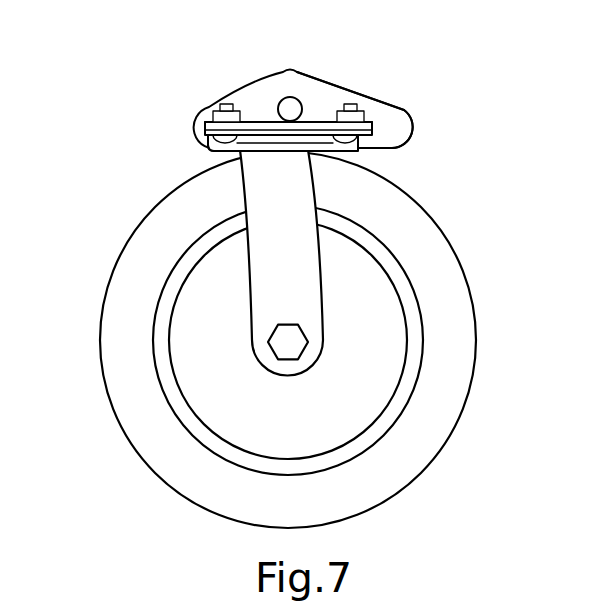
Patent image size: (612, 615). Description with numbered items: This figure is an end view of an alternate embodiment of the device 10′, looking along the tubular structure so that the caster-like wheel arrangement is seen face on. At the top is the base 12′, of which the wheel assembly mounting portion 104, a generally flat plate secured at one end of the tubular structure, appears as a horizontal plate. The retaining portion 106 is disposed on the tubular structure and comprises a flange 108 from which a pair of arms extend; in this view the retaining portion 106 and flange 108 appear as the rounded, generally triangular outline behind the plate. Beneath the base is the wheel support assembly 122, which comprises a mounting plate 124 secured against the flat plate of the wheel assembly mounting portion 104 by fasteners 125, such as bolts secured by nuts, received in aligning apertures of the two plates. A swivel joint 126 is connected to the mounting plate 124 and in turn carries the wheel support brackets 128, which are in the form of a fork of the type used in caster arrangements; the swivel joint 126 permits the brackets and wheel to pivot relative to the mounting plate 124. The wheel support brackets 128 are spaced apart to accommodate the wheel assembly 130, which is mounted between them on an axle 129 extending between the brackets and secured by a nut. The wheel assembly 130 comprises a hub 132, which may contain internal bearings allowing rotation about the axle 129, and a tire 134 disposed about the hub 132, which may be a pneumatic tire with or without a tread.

The device 10′ is at (467, 63).
The base 12′ is at (312, 105).
The wheel assembly mounting portion 104 is at (262, 112).
The retaining portion 106 is at (395, 102).
The flange 108 is at (402, 128).
The wheel support assembly 122 is at (214, 155).
The mounting plate 124 is at (378, 140).
The fasteners 125 is at (233, 103).
The swivel joint 126 is at (313, 153).
The wheel support brackets 128 is at (303, 295).
The axle 129 is at (289, 348).
The wheel assembly 130 is at (461, 431).
The hub 132 is at (210, 307).
The tire 134 is at (117, 372).